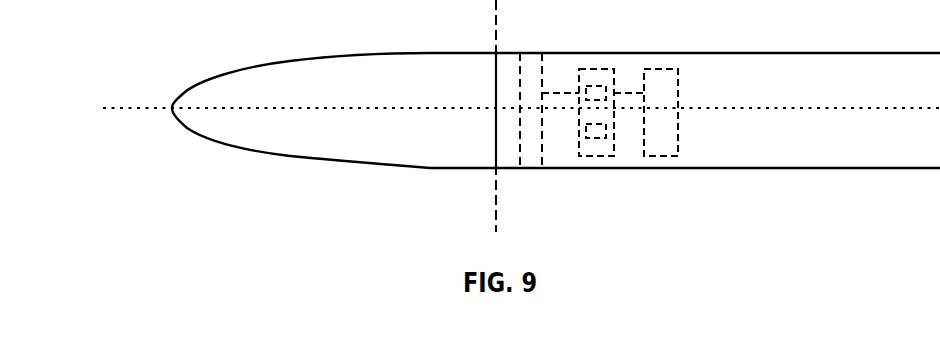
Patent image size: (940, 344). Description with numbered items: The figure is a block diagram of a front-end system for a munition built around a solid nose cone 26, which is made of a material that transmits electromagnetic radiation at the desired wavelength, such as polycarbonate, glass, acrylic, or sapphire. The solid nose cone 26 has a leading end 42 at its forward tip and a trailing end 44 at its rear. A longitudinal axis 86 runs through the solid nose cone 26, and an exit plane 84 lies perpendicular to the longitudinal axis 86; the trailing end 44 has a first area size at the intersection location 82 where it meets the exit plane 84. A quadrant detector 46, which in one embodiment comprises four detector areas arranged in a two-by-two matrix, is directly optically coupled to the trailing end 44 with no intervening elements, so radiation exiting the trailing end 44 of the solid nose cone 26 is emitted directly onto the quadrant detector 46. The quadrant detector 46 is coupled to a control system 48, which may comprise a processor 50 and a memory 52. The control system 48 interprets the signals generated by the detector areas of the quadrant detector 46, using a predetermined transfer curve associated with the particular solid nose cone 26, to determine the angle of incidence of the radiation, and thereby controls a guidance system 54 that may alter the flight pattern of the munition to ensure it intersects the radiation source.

The solid nose cone 26 is at (385, 100).
The leading end 42 is at (262, 63).
The trailing end 44 is at (496, 82).
The quadrant detector 46 is at (543, 85).
The control system 48 is at (608, 157).
The processor 50 is at (590, 85).
The memory 52 is at (590, 139).
The guidance system 54 is at (670, 157).
The intersection location 82 is at (496, 132).
The exit plane 84 is at (495, 198).
The longitudinal axis 86 is at (126, 108).